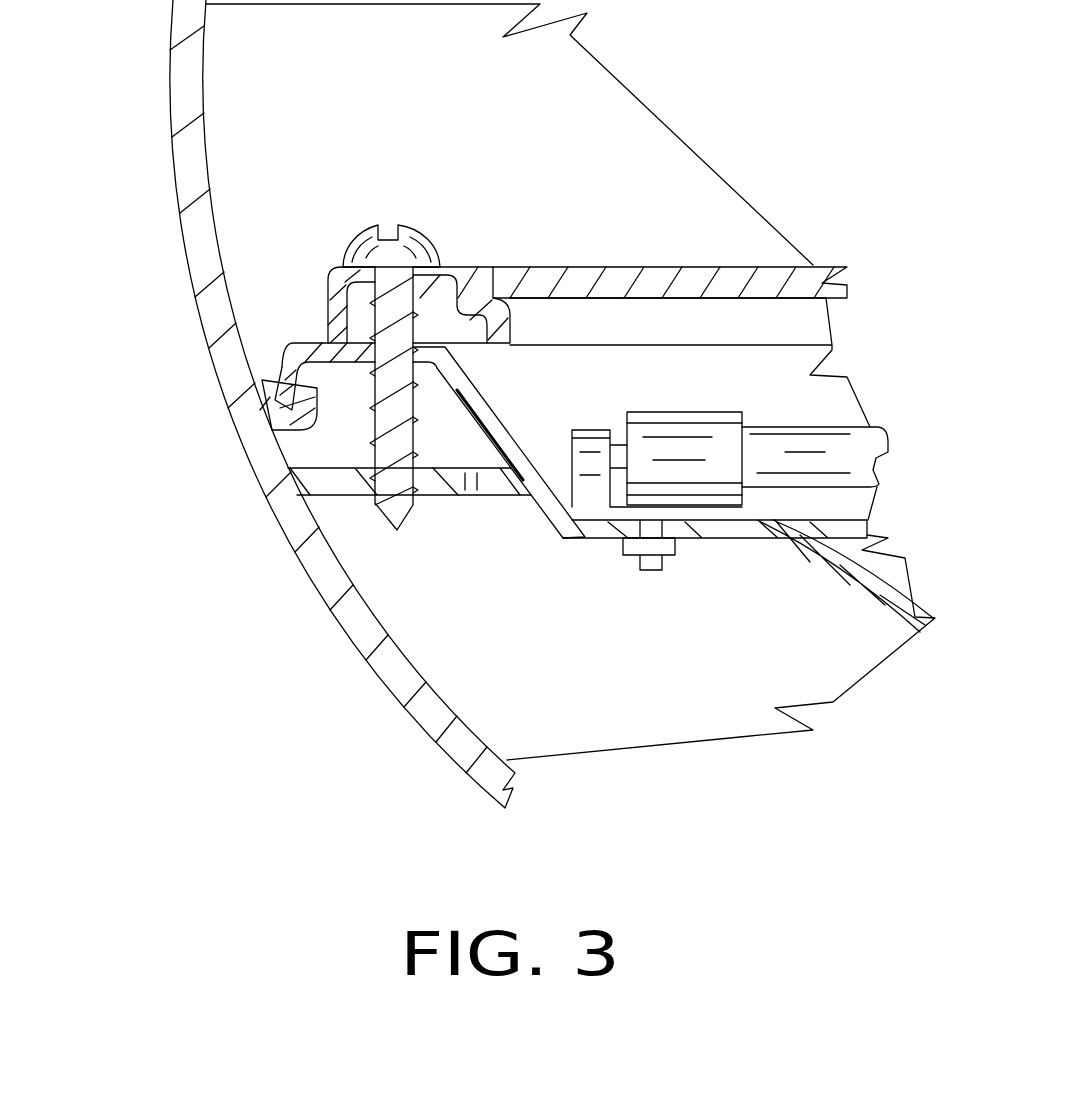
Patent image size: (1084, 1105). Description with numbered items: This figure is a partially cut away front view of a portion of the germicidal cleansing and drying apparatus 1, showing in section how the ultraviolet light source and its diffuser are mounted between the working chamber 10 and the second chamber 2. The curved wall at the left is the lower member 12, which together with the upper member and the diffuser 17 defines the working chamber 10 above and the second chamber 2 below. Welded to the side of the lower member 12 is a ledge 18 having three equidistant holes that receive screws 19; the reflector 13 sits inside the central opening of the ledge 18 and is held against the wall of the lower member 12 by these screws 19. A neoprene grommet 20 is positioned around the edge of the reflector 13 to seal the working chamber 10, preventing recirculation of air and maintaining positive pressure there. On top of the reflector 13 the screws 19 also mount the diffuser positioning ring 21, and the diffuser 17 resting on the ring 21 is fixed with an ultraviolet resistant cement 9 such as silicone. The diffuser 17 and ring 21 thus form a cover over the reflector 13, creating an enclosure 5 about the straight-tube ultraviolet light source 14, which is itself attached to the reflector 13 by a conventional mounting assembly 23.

The germicidal cleansing and drying apparatus 1 is at (160, 191).
The second chamber 2 is at (626, 687).
The enclosure 5 is at (644, 337).
The ultraviolet resistant cement 9 is at (490, 265).
The working chamber 10 is at (348, 91).
The lower member 12 is at (318, 573).
The reflector 13 is at (292, 343).
The ultraviolet light source 14 is at (857, 455).
The diffuser 17 is at (653, 267).
The ledge 18 is at (318, 478).
The screws 19 is at (423, 233).
The grommet 20 is at (267, 392).
The diffuser positioning ring 21 is at (332, 267).
The mounting assembly 23 is at (725, 445).